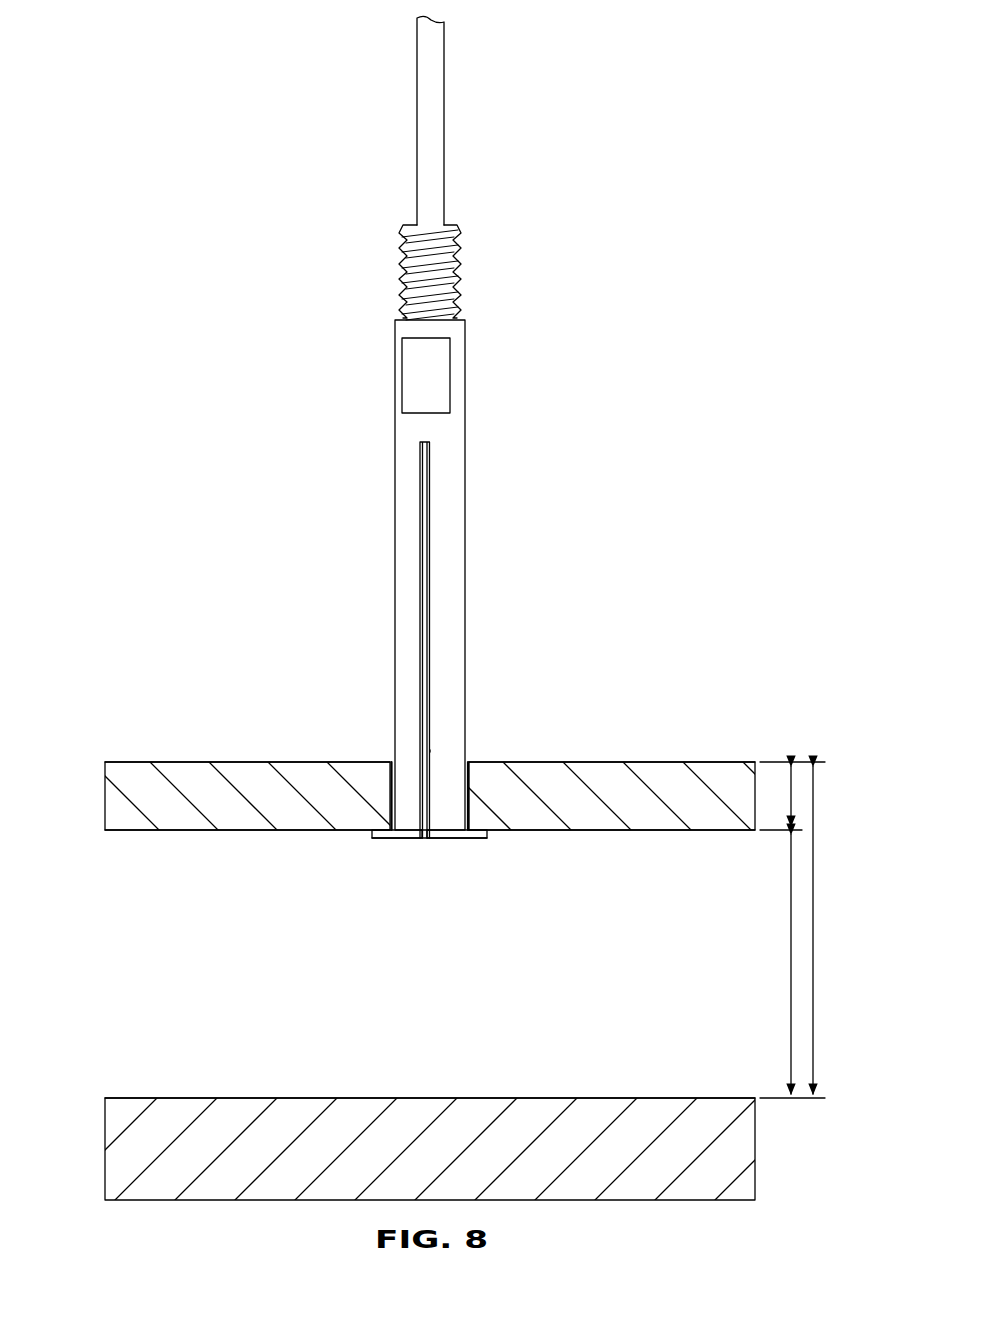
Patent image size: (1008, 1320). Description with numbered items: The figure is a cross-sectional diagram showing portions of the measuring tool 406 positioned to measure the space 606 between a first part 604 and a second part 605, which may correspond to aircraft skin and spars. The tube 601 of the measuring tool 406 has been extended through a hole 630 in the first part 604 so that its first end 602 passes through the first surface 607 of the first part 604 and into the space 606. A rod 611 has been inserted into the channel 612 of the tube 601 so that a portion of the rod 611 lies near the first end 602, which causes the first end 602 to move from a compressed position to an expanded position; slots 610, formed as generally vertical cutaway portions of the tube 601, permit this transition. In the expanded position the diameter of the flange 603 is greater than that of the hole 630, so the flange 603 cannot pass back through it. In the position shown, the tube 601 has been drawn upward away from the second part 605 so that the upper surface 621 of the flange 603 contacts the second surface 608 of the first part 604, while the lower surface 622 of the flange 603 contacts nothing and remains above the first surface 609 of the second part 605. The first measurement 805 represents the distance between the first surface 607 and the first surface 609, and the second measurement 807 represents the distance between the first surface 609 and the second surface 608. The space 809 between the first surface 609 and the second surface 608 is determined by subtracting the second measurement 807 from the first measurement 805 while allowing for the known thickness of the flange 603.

The measuring tool 406 is at (190, 559).
The space 606 is at (97, 906).
The rod 611 is at (417, 98).
The channel 612 is at (456, 209).
The tube 601 is at (465, 474).
The hole 630 is at (420, 483).
The slots 610 is at (430, 750).
The first part 604 is at (658, 759).
The first surface of first part 607 is at (177, 762).
The second surface of first part 608 is at (177, 830).
The upper surface of flange 621 is at (380, 830).
The first end of tube 602 is at (468, 807).
The lower surface of flange 622 is at (383, 838).
The flange 603 is at (448, 846).
The second part 605 is at (658, 1095).
The first surface of second part 609 is at (182, 1098).
The second measurement 807 is at (791, 795).
The first measurement 805 is at (791, 960).
The space 809 is at (813, 960).